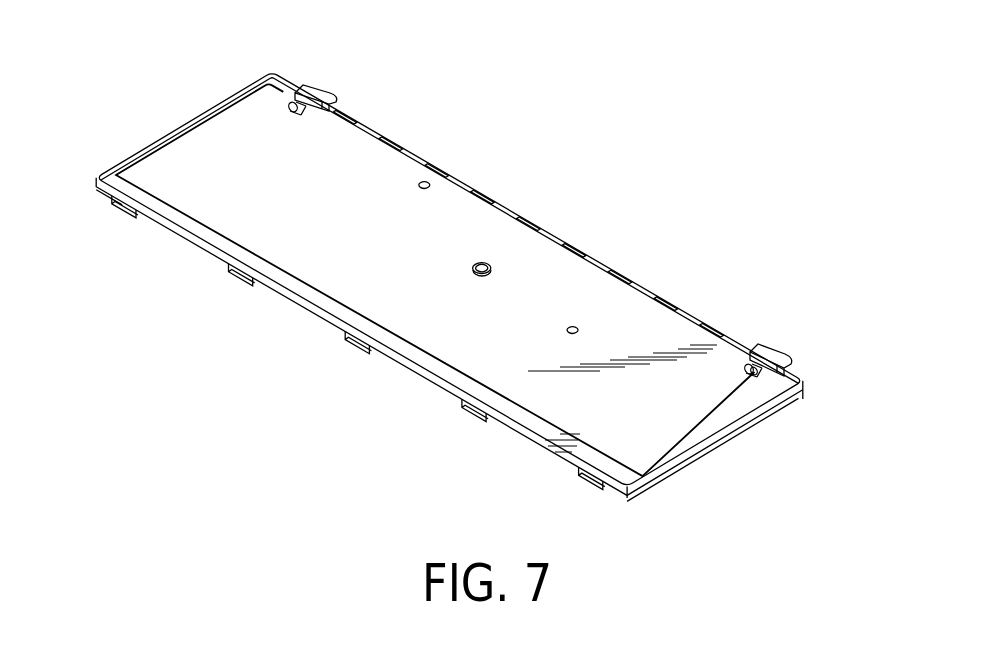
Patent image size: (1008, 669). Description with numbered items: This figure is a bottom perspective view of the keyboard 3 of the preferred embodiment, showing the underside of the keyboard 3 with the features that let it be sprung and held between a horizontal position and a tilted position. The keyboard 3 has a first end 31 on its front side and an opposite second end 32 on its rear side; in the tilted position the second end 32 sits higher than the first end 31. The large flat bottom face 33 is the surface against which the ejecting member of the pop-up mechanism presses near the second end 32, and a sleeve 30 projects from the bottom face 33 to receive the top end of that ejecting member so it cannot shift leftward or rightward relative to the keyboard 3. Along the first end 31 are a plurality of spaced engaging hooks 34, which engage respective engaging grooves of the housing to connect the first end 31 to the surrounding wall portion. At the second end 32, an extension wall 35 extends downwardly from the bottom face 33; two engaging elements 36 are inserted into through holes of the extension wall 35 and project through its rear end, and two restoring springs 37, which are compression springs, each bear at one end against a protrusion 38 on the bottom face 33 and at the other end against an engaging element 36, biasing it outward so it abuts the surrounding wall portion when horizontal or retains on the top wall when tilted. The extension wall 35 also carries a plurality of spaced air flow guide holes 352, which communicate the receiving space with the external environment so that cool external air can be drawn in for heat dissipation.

The keyboard 3 is at (537, 210).
The sleeve 30 is at (485, 262).
The first end 31 is at (413, 378).
The second end 32 is at (568, 238).
The bottom face 33 is at (437, 205).
The engaging hooks 34 is at (350, 350).
The extension wall 35 is at (653, 290).
The air flow guide holes 352 is at (637, 283).
The engaging elements 36 is at (322, 88).
The restoring springs 37 is at (300, 101).
The protrusion 38 is at (750, 373).